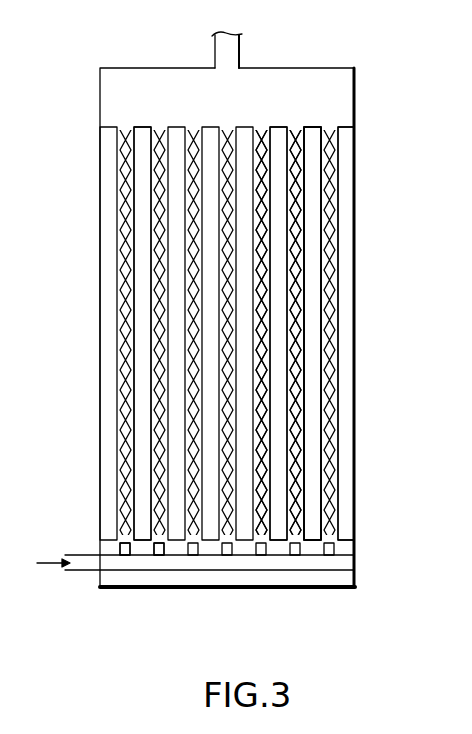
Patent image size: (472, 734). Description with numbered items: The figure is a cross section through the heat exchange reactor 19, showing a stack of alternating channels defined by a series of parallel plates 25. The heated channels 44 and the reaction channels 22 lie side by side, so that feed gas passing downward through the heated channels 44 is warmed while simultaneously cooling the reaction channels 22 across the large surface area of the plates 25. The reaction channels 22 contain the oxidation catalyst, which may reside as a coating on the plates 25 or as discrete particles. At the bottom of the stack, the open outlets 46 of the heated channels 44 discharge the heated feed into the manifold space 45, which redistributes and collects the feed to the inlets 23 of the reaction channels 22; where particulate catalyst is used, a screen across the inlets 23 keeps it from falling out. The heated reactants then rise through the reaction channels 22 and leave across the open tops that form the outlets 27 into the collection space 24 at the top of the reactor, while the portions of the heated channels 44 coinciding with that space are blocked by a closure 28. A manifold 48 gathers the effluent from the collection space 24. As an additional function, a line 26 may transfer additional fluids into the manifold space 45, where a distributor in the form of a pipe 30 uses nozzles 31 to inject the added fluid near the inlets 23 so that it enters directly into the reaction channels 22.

The heat exchange reactor 19 is at (355, 299).
The reaction channels 22 is at (225, 312).
The inlets of reaction channels 23 is at (222, 540).
The collection space 24 is at (244, 103).
The plates 25 is at (132, 457).
The line 26 is at (52, 563).
The outlets of reaction channels 27 is at (294, 128).
The closure 28 is at (341, 128).
The pipe 30 is at (233, 567).
The nozzles 31 is at (166, 552).
The heated channels 44 is at (278, 305).
The manifold space 45 is at (265, 580).
The outlets of heated channels 46 is at (313, 532).
The manifold 48 is at (240, 46).